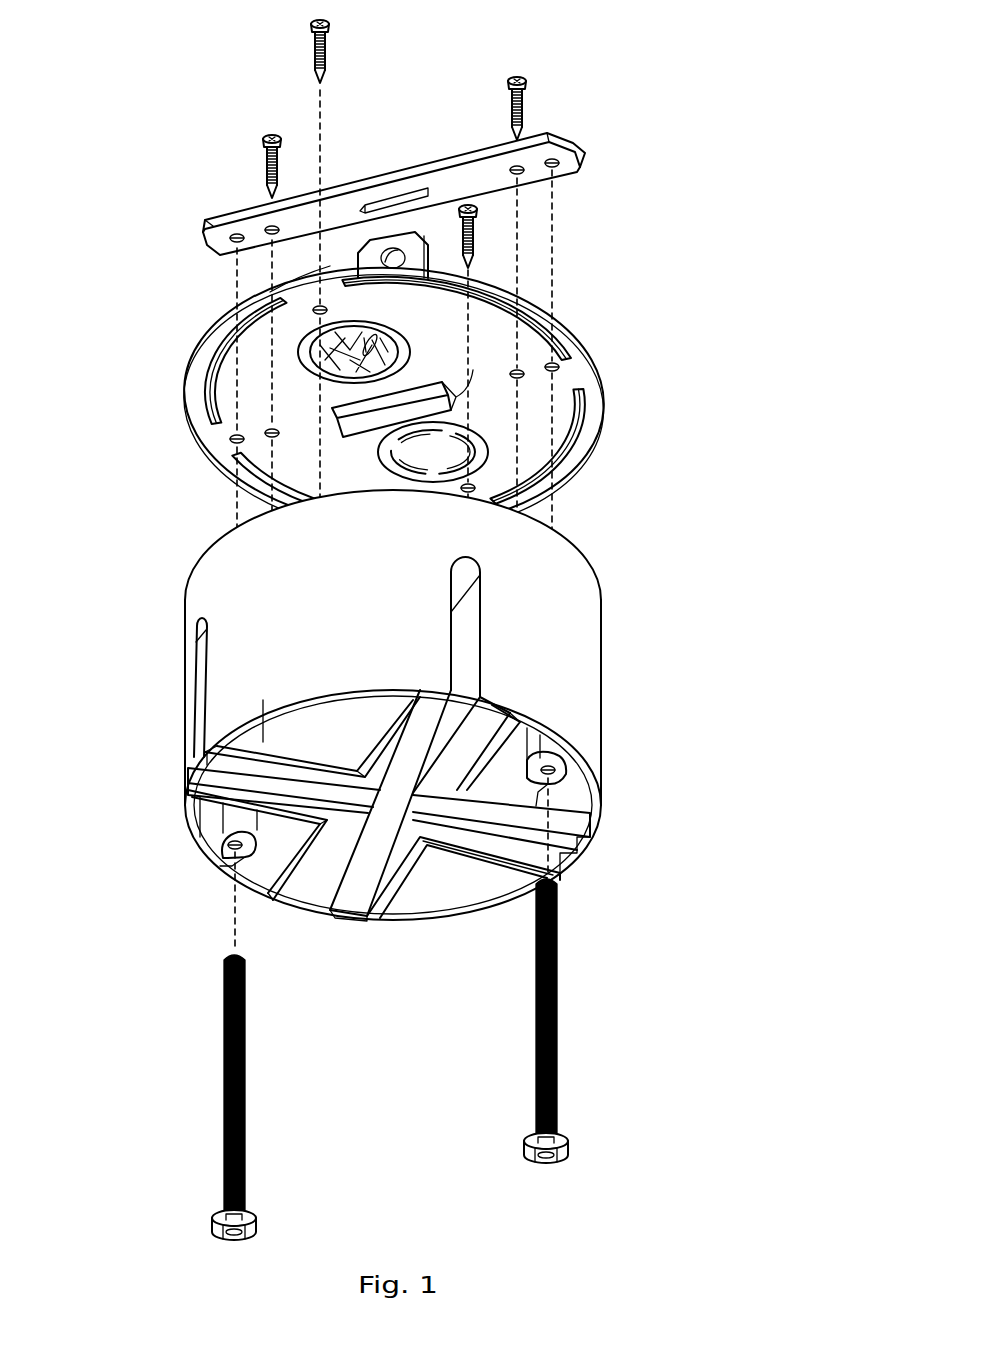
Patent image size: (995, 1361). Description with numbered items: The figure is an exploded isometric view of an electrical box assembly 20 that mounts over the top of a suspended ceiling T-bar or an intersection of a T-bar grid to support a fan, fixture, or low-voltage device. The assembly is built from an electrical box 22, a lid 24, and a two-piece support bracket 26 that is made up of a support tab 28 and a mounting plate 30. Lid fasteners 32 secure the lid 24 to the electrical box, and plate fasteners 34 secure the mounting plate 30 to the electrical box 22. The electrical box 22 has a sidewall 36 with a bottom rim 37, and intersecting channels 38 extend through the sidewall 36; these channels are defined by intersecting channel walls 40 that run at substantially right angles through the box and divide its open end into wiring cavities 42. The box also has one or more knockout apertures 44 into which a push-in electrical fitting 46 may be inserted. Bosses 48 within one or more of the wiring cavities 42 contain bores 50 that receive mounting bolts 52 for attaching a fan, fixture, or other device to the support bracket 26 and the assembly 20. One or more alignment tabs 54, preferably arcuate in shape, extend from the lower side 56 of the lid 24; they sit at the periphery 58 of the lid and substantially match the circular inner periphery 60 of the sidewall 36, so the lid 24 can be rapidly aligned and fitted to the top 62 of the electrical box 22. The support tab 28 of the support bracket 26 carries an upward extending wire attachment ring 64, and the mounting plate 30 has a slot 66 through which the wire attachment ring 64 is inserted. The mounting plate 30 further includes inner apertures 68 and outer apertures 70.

The electrical box assembly 20 is at (110, 265).
The electrical box 22 is at (600, 652).
The lid 24 is at (578, 347).
The two-piece support bracket 26 is at (607, 147).
The support tab 28 is at (300, 277).
The mounting plate 30 is at (205, 225).
The lid fasteners 32 is at (332, 53).
The plate fasteners 34 is at (262, 173).
The sidewall 36 is at (305, 603).
The bottom rim 37 is at (590, 812).
The intersecting channels 38 is at (465, 630).
The intersecting channel walls 40 is at (370, 885).
The wiring cavities 42 is at (460, 892).
The knockout apertures 44 is at (560, 465).
The push-in electrical fitting 46 is at (398, 333).
The bosses 48 is at (567, 762).
The bores 50 is at (602, 795).
The mounting bolts 52 is at (560, 958).
The alignment tabs 54 is at (583, 422).
The lower side 56 is at (275, 395).
The periphery 58 is at (190, 437).
The circular inner periphery 60 is at (302, 720).
The top 62 is at (588, 562).
The wire attachment ring 64 is at (418, 243).
The slot 66 is at (383, 205).
The inner apertures 68 is at (512, 172).
The outer apertures 70 is at (558, 168).